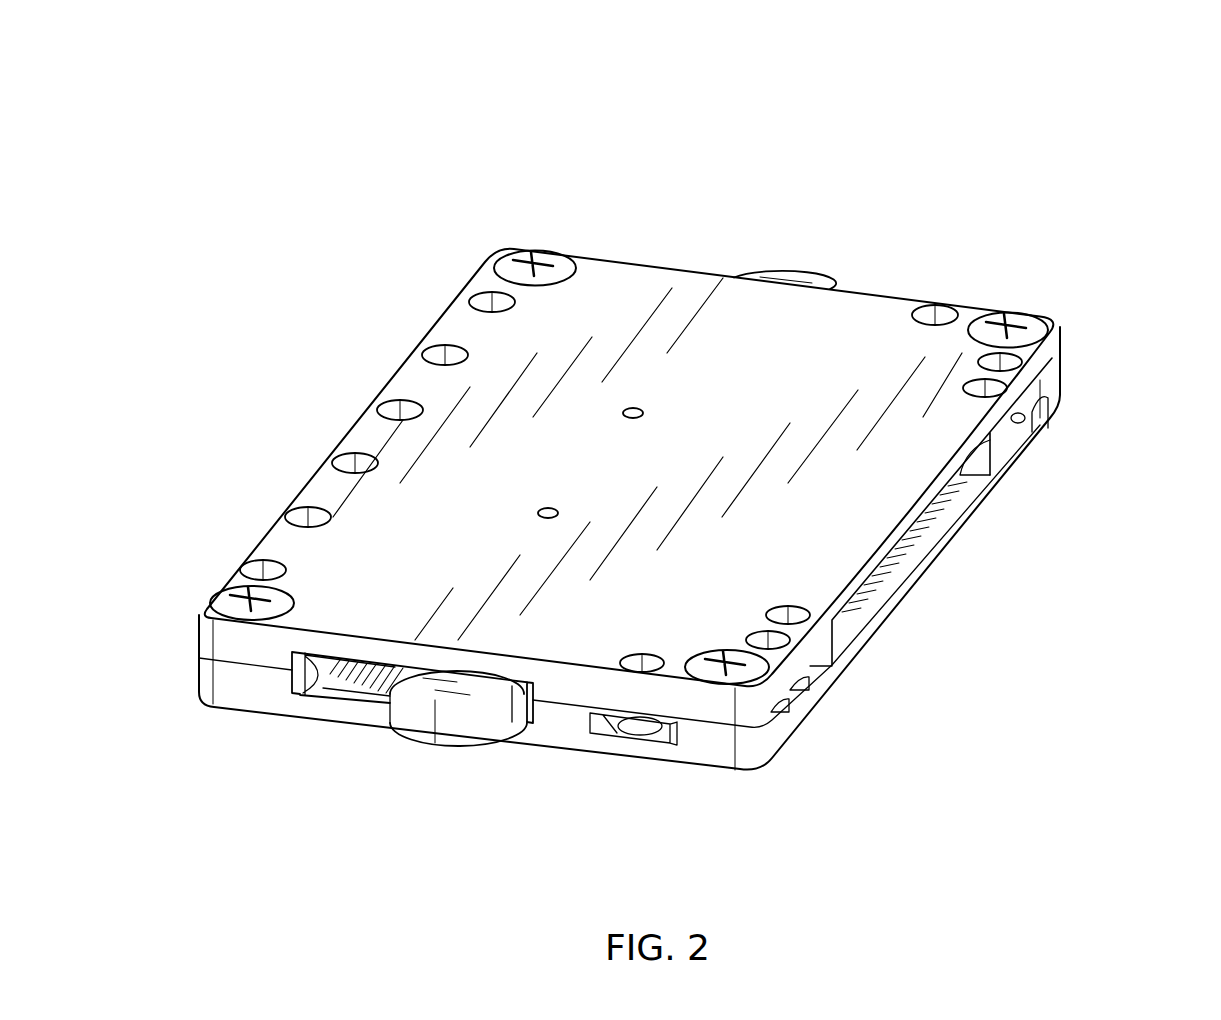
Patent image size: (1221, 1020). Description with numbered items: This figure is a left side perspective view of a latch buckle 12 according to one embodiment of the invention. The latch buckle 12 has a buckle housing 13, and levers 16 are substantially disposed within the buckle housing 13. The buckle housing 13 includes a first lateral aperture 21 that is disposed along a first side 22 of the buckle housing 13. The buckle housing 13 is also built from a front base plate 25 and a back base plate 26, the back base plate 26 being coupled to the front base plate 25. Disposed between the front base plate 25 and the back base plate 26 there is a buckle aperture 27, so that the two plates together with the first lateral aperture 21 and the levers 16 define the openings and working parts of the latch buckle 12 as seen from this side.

The latch buckle 12 is at (577, 122).
The buckle housing 13 is at (1083, 313).
The levers 16 is at (420, 700).
The first lateral aperture 21 is at (330, 693).
The first side 22 is at (670, 792).
The front base plate 25 is at (777, 362).
The back base plate 26 is at (245, 688).
The buckle aperture 27 is at (903, 565).